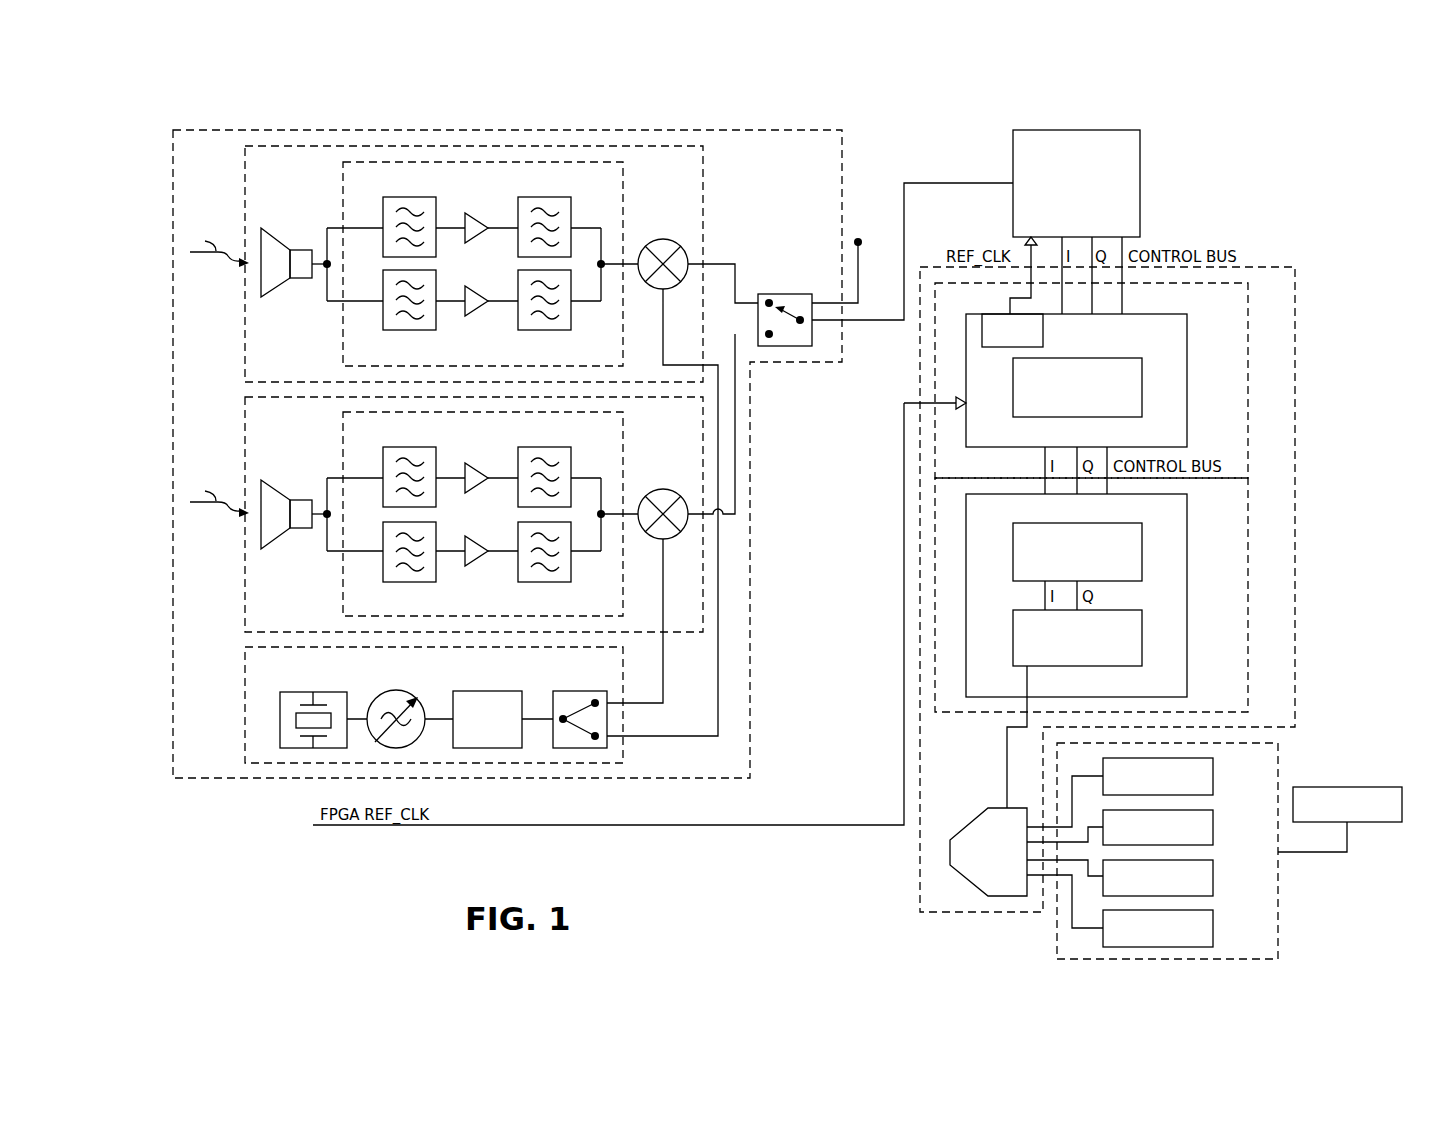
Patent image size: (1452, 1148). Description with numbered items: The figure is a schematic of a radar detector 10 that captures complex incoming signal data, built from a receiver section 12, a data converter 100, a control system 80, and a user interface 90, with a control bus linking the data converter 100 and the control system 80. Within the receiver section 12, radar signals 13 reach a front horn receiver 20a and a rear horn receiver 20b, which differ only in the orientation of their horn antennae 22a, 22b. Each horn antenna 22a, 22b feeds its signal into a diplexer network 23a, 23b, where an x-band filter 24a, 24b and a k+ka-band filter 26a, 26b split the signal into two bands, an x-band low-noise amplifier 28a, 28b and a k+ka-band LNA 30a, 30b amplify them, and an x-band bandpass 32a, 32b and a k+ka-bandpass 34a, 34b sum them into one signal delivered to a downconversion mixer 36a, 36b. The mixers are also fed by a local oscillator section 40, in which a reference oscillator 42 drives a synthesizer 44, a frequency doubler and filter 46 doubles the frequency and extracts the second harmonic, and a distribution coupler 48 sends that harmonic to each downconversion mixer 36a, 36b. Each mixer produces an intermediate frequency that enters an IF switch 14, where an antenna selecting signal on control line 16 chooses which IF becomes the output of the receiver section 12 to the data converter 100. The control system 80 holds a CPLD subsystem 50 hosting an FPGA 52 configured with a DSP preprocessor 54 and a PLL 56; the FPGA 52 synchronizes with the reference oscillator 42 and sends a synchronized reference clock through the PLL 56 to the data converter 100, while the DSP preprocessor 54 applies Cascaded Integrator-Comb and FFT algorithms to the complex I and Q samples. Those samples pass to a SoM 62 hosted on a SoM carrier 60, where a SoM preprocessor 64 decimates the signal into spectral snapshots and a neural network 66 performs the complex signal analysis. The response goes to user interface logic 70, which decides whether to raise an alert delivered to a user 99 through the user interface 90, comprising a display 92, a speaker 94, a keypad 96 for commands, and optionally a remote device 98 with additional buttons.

The detector 10 is at (1206, 80).
The receiver section 12 is at (172, 172).
The radar signals 13 is at (217, 370).
The IF switch 14 is at (771, 294).
The control line 16 is at (860, 243).
The front horn receiver 20a is at (245, 190).
The rear horn receiver 20b is at (245, 441).
The horn antenna 22a is at (283, 244).
The horn antenna 22b is at (283, 496).
The diplexer network 23a is at (343, 190).
The diplexer network 23b is at (343, 441).
The x-band filter 24a is at (404, 197).
The x-band filter 24b is at (404, 447).
The k+ka-band filter 26a is at (404, 330).
The k+ka-band filter 26b is at (404, 582).
The x-band low-noise amplifier 28a is at (474, 214).
The x-band low-noise amplifier 28b is at (474, 464).
The k+ka-band LNA 30a is at (477, 313).
The k+ka-band LNA 30b is at (477, 564).
The x-band bandpass 32a is at (548, 197).
The x-band bandpass 32b is at (548, 447).
The k+ka-bandpass 34a is at (548, 330).
The k+ka-bandpass 34b is at (548, 582).
The downconversion mixer 36a is at (663, 239).
The downconversion mixer 36b is at (663, 489).
The local oscillator section 40 is at (417, 705).
The reference oscillator 42 is at (297, 692).
The synthesizer 44 is at (398, 690).
The frequency doubler and filter 46 is at (470, 691).
The distribution coupler 48 is at (570, 691).
The CPLD subsystem 50 is at (1250, 314).
The field programmable gate array 52 is at (1189, 346).
The DSP preprocessor 54 is at (1144, 374).
The phase locked loop 56 is at (1043, 331).
The SoM carrier 60 is at (1249, 524).
The system on module 62 is at (1188, 524).
The SoM preprocessor 64 is at (1143, 560).
The neural network 66 is at (1143, 645).
The user interface logic 70 is at (978, 815).
The control system 80 is at (1281, 267).
The user interface 90 is at (1280, 772).
The display 92 is at (1213, 827).
The speaker 94 is at (1213, 776).
The keypad 96 is at (1213, 877).
The remote device 98 is at (1213, 927).
The user 99 is at (1382, 787).
The data converter 100 is at (1145, 175).